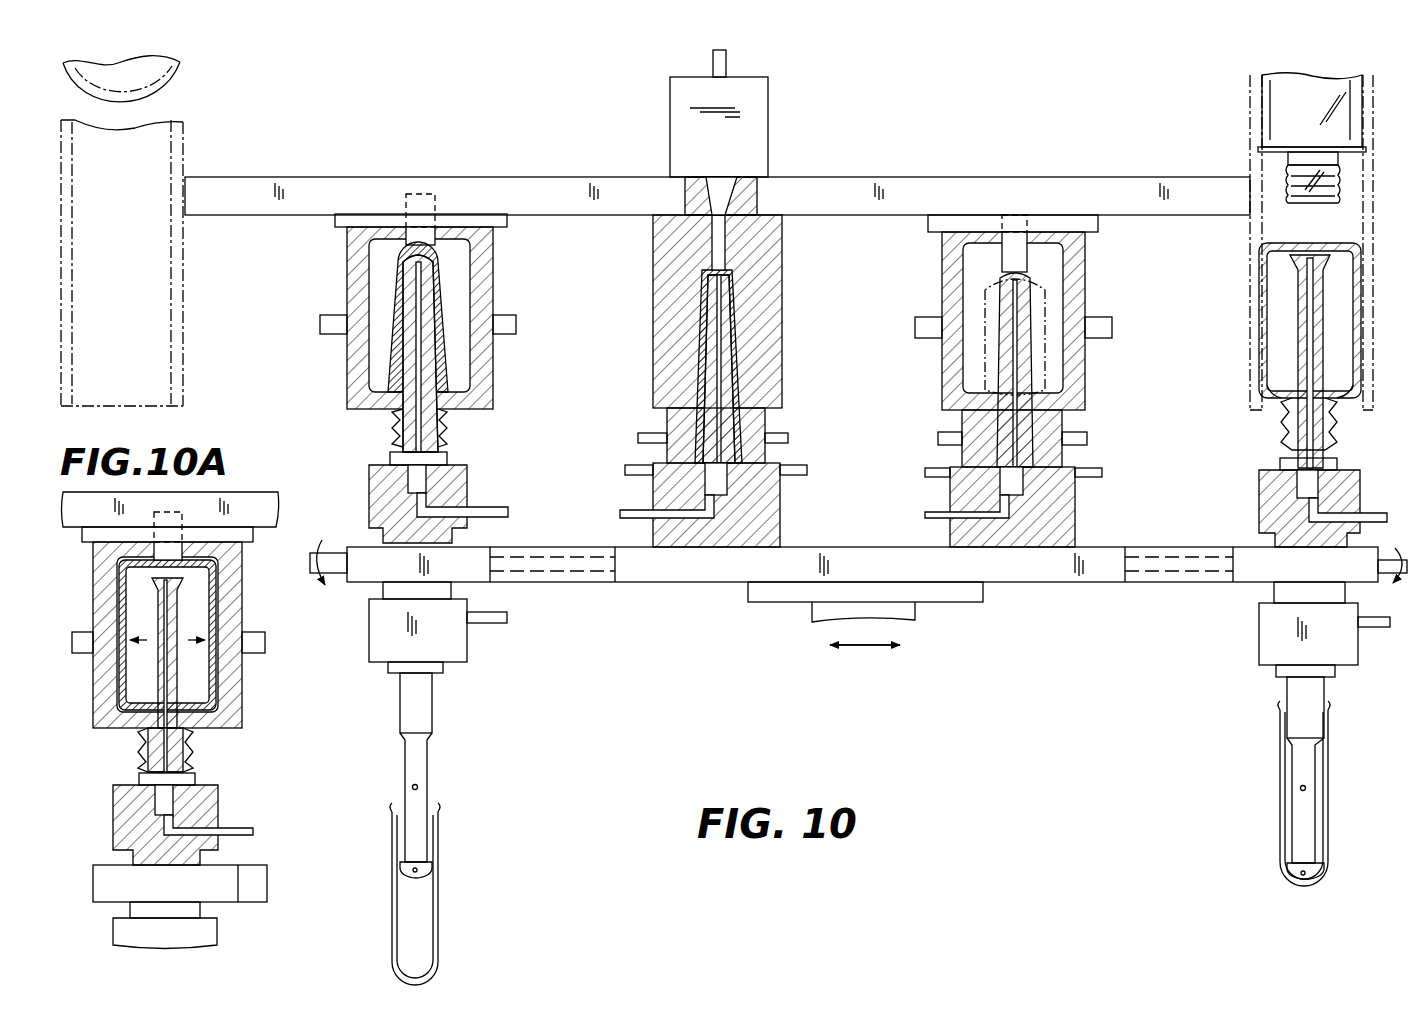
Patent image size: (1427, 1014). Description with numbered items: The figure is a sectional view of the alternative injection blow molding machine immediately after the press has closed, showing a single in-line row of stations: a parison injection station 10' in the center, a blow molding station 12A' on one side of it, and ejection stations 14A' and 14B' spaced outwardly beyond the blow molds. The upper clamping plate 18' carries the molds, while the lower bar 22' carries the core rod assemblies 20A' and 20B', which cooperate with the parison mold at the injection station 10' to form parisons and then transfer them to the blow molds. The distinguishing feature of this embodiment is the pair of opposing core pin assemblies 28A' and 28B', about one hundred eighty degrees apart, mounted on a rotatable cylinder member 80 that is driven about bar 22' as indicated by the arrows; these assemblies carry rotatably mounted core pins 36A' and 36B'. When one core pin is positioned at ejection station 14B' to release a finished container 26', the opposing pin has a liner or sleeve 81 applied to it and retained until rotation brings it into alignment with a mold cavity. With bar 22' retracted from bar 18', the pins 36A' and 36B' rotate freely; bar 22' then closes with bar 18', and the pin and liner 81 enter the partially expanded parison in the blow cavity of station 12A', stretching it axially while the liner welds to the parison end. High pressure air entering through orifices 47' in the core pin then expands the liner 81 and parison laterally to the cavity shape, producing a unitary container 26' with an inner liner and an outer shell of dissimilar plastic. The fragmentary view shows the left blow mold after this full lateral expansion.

The ejection station 14A' is at (158, 231).
The parison injection station 10' is at (752, 132).
The clamping plate 18' is at (717, 170).
The blow molding station 12A' is at (441, 301).
The orifices 47' is at (374, 316).
The core pin 36A' is at (421, 566).
The core pin assembly 28A' is at (472, 554).
The rotatable cylinder member 80 is at (475, 555).
The core rod assembly 20A' is at (735, 505).
The core rod assembly 20B' is at (978, 507).
The indexing plate or bar 22' is at (862, 596).
The ejection station 14B' is at (1263, 241).
The final container with liner 26' is at (1334, 320).
The core pin 36B' is at (1292, 567).
The core pin assembly 28B' is at (1281, 573).
The liner or sleeve 81 is at (438, 927).